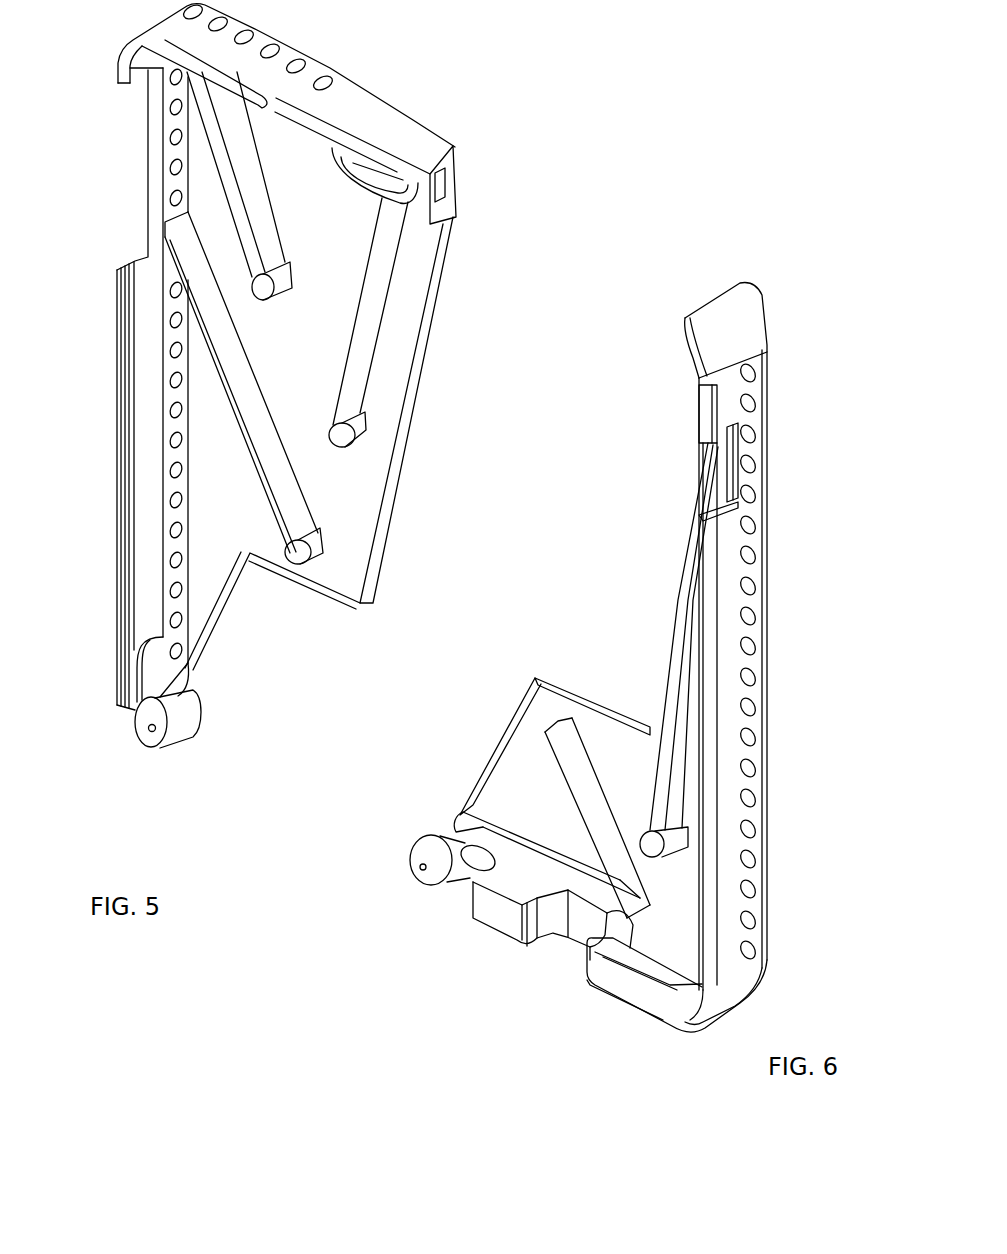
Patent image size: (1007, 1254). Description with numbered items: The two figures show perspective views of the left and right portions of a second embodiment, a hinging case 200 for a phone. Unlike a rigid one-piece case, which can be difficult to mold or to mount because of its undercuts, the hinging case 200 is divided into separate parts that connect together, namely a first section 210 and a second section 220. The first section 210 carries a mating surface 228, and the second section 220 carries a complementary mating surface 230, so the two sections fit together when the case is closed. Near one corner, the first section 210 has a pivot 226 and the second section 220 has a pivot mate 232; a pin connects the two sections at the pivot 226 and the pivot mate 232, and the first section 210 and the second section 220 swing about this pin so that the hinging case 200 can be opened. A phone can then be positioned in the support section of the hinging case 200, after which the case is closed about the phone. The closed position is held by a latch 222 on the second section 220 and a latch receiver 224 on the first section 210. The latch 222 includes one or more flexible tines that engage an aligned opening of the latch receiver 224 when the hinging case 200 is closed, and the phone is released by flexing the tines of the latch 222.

In FIG. 5, the hinging case 200 is at (619, 115).
In FIG. 5, the first section 210 is at (110, 225).
In FIG. 6, the second section 220 is at (777, 296).
In FIG. 6, the latch 222 is at (700, 308).
In FIG. 5, the latch receiver 224 is at (447, 190).
In FIG. 5, the pivot 226 is at (153, 732).
In FIG. 5, the mating surface 228 is at (407, 430).
In FIG. 6, the mating surface 230 is at (580, 700).
In FIG. 6, the pivot mate 232 is at (425, 875).